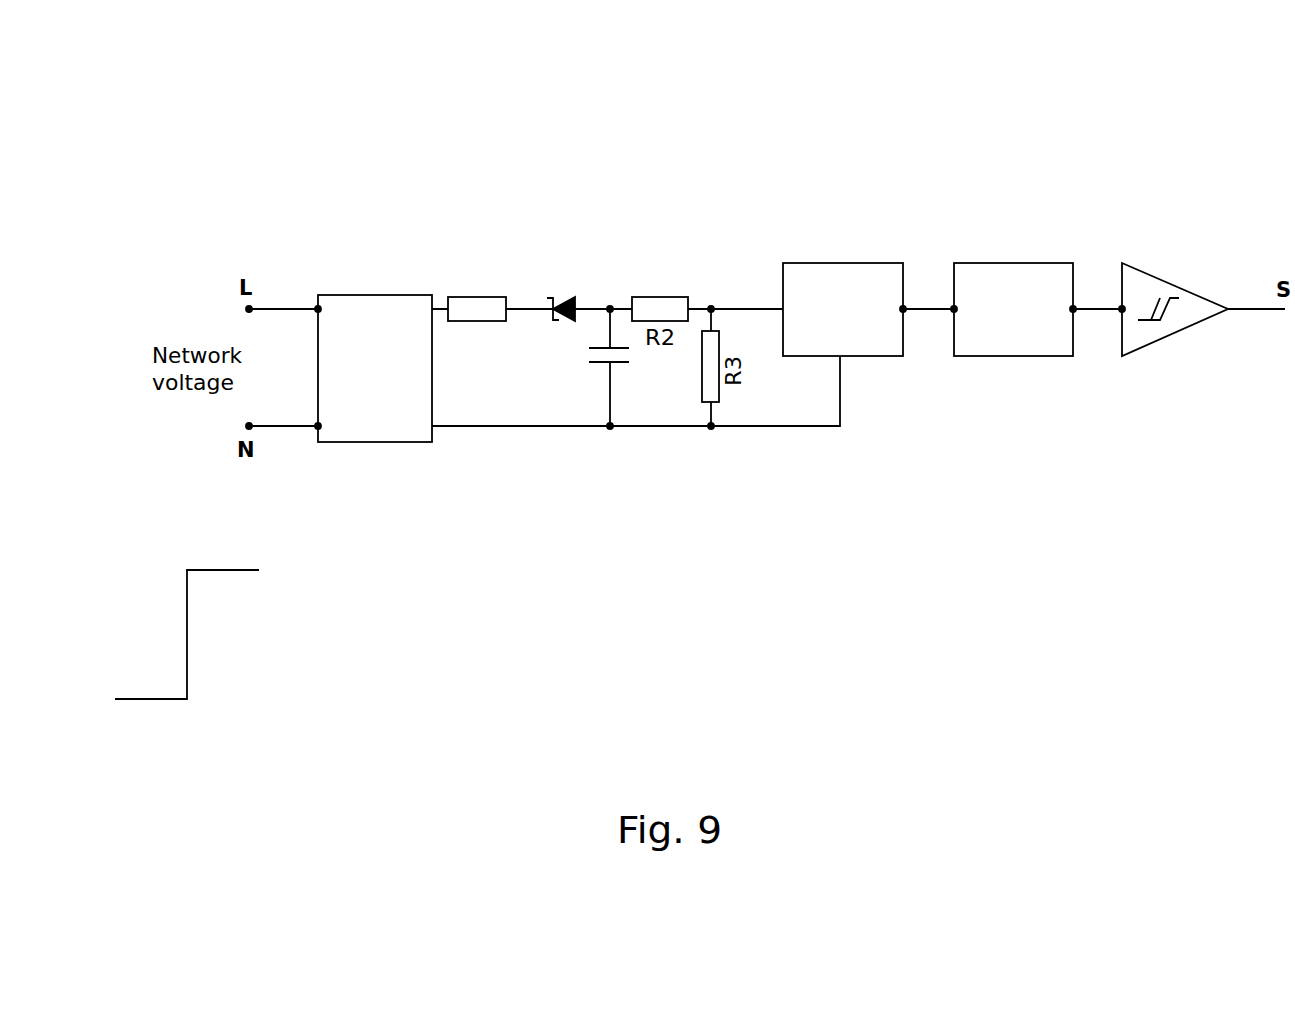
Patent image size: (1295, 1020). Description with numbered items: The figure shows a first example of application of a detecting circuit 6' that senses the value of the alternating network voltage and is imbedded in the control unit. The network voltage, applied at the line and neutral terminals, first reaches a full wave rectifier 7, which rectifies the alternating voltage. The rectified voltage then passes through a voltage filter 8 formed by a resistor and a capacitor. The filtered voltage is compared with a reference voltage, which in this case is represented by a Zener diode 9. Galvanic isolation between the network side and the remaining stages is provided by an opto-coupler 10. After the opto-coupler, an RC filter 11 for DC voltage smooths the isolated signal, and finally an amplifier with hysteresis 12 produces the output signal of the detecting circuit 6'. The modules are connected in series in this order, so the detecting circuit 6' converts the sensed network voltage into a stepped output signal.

The full wave rectifier 7 is at (378, 295).
The voltage filter 8 is at (498, 321).
The Zener diode 9 is at (576, 297).
The opto-coupler 10 is at (864, 263).
The RC filter 11 is at (988, 263).
The amplifier with hysteresis 12 is at (1140, 350).
The detecting circuit 6' is at (184, 651).